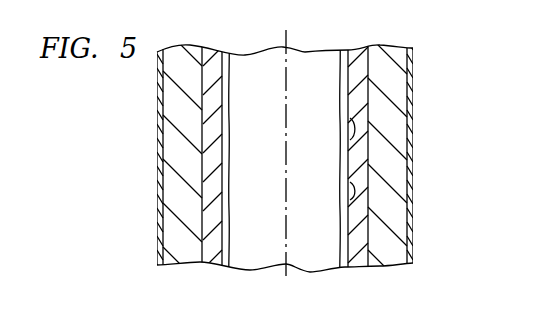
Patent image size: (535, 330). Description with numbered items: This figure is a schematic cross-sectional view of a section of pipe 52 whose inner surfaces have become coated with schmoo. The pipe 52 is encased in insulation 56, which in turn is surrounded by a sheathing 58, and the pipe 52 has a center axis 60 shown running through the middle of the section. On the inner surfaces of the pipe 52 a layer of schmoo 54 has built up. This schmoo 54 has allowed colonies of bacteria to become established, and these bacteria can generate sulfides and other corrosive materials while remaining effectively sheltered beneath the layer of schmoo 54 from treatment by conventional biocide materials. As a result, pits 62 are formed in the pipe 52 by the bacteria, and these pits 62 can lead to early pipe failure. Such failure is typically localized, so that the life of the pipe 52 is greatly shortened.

The pipe 52 is at (208, 57).
The layer of schmoo 54 is at (340, 242).
The insulation 56 is at (398, 92).
The sheathing 58 is at (408, 176).
The center axis 60 is at (287, 130).
The pits 62 is at (350, 128).